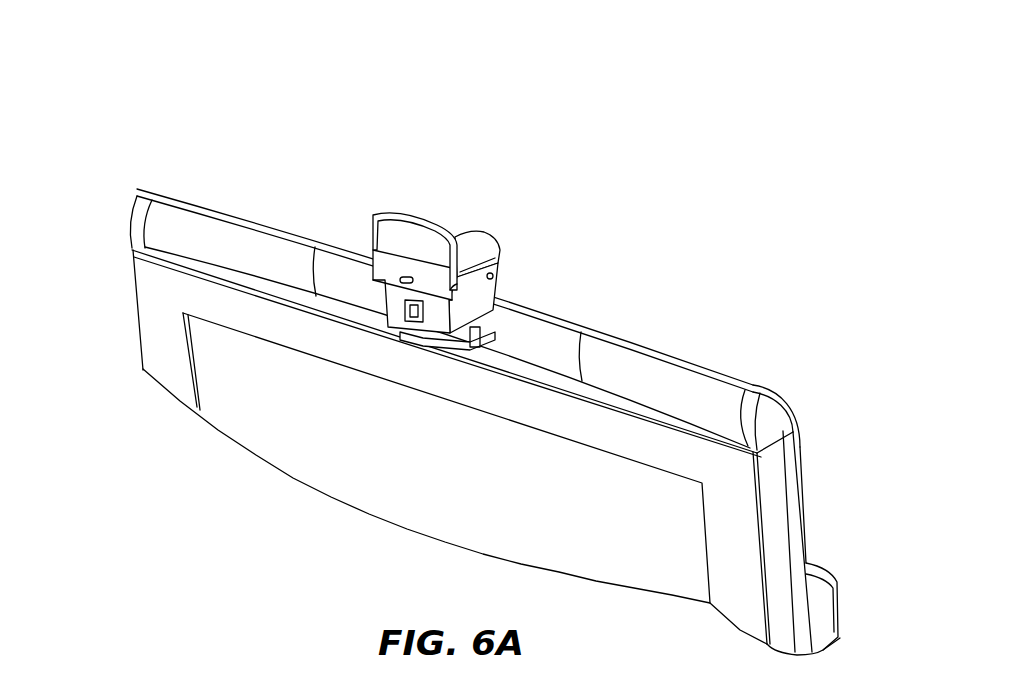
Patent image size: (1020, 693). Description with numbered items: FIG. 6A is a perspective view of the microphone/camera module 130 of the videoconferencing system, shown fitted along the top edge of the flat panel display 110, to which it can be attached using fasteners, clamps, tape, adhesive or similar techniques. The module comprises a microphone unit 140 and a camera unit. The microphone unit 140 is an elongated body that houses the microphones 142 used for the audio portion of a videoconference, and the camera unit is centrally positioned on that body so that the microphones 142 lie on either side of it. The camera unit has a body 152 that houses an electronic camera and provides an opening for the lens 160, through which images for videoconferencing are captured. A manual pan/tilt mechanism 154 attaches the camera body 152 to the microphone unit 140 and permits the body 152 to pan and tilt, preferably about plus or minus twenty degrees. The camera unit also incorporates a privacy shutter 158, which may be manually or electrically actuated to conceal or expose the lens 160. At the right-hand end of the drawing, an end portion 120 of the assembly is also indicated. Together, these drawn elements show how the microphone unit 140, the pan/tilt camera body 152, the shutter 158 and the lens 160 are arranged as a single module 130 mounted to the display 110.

The flat panel display 110 is at (136, 322).
The end support leg 120 is at (866, 583).
The microphone/camera module 130 is at (438, 282).
The microphone unit 140 is at (731, 380).
The microphones 142 is at (233, 240).
The body 152 is at (442, 305).
The manual pan/tilt mechanism 154 is at (470, 337).
The privacy shutter 158 is at (386, 213).
The lens 160 is at (405, 315).